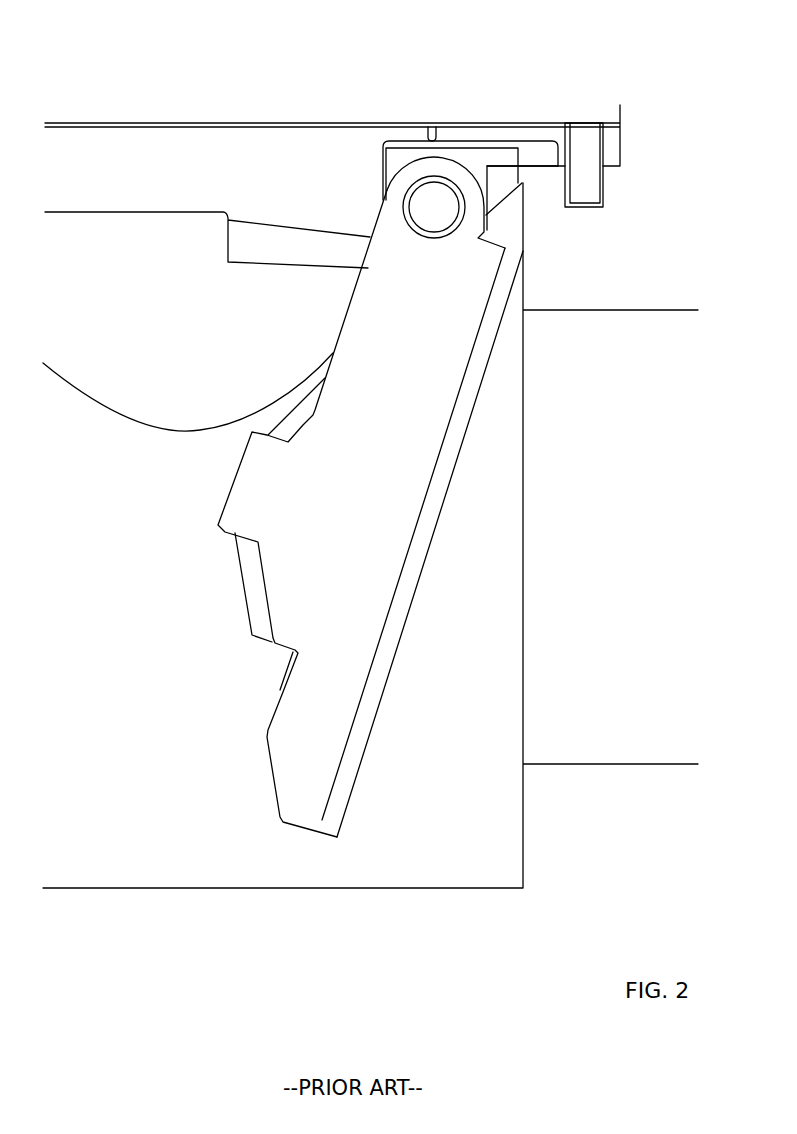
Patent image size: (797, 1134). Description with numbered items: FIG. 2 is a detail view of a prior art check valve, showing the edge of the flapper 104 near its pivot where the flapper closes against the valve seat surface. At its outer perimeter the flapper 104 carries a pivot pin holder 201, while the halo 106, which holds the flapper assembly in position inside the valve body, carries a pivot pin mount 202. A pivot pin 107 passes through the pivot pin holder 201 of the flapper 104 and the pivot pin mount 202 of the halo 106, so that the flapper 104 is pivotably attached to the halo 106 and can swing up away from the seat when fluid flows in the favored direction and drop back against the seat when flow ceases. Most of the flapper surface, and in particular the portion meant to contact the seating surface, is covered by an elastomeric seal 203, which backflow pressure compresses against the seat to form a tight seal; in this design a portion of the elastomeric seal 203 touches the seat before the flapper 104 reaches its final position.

The flapper 104 is at (341, 284).
The halo 106 is at (543, 109).
The pivot pin 107 is at (434, 179).
The pivot pin holder 201 is at (383, 147).
The pivot pin mount 202 is at (518, 170).
The elastomeric seal 203 is at (458, 504).